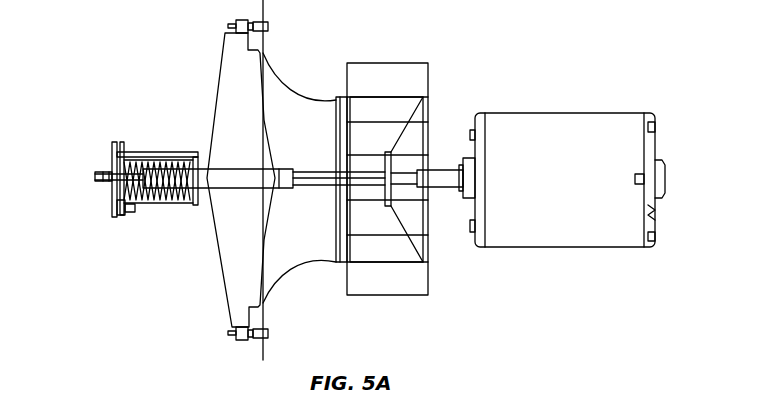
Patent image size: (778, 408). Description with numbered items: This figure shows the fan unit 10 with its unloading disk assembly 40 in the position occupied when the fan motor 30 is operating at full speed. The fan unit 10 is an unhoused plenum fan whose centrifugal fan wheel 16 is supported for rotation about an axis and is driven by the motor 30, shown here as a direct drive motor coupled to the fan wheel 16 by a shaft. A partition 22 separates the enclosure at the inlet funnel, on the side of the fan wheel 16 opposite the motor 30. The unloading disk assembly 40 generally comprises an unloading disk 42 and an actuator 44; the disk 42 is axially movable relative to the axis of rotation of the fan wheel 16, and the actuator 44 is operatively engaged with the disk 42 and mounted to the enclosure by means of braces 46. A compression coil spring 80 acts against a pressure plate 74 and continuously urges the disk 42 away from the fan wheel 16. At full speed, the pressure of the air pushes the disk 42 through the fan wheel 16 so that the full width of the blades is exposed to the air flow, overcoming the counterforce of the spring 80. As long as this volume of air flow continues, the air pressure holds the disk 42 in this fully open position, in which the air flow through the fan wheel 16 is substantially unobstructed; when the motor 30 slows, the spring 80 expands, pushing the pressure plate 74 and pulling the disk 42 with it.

The fan unit 10 is at (474, 52).
The centrifugal fan wheel 16 is at (388, 95).
The partition 22 is at (263, 318).
The motor 30 is at (565, 112).
The unloading disk assembly 40 is at (182, 204).
The unloading disk 42 is at (418, 243).
The actuator 44 is at (190, 151).
The braces 46 is at (217, 94).
The pressure plate 74 is at (110, 200).
The compression coil spring 80 is at (150, 205).